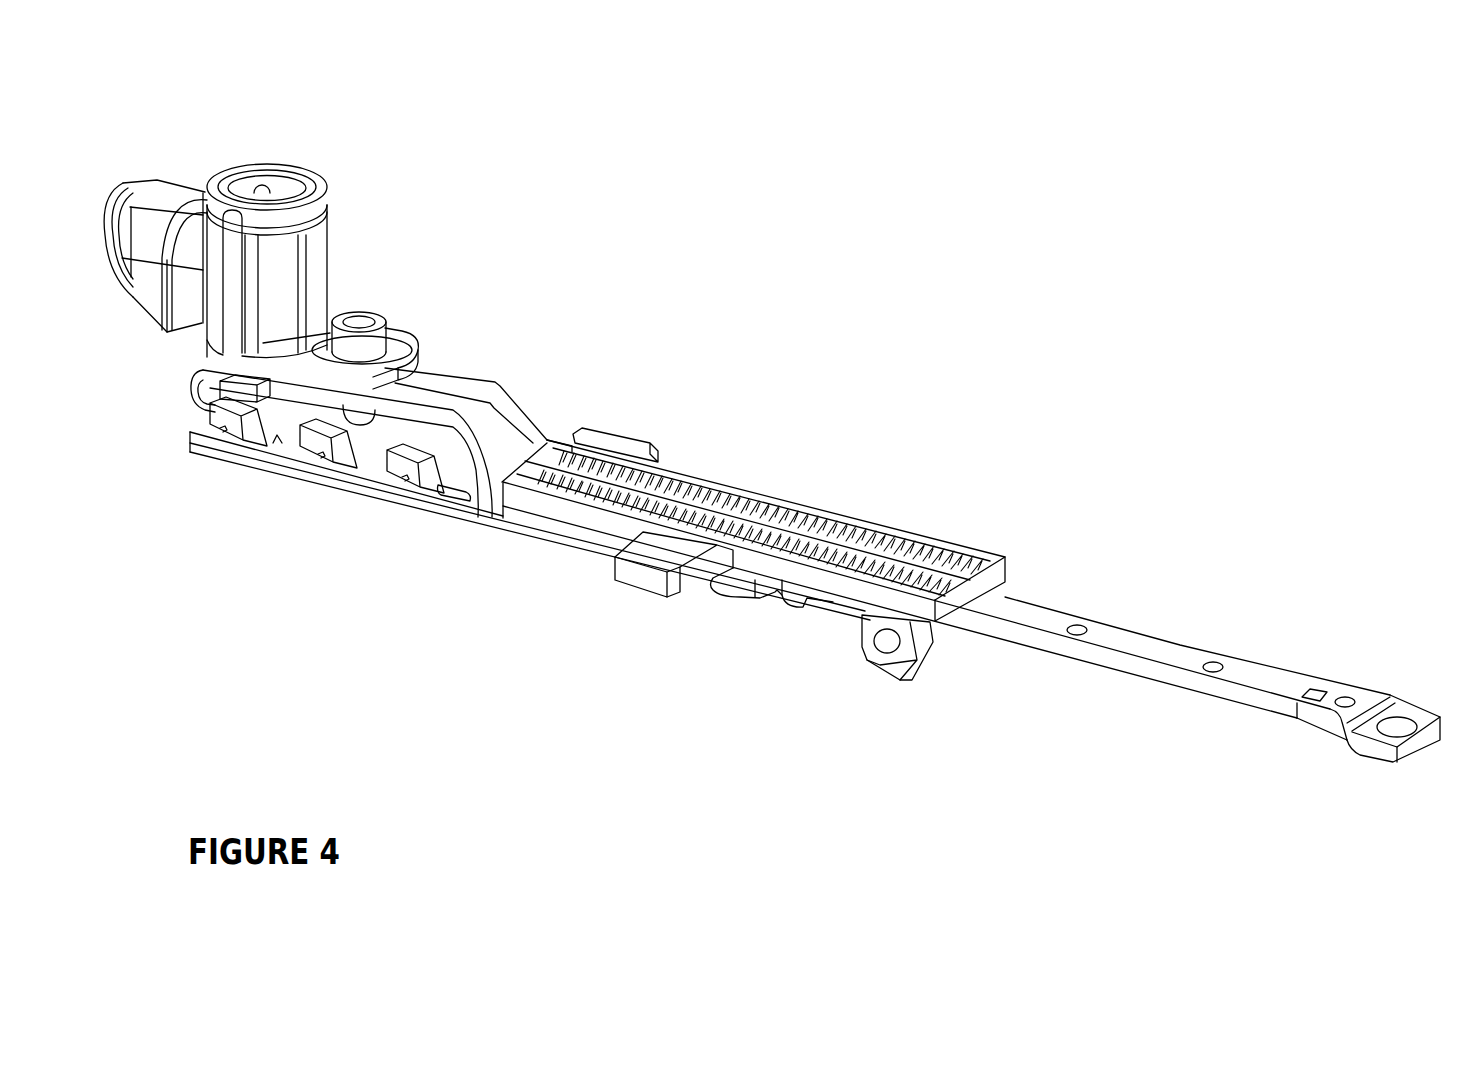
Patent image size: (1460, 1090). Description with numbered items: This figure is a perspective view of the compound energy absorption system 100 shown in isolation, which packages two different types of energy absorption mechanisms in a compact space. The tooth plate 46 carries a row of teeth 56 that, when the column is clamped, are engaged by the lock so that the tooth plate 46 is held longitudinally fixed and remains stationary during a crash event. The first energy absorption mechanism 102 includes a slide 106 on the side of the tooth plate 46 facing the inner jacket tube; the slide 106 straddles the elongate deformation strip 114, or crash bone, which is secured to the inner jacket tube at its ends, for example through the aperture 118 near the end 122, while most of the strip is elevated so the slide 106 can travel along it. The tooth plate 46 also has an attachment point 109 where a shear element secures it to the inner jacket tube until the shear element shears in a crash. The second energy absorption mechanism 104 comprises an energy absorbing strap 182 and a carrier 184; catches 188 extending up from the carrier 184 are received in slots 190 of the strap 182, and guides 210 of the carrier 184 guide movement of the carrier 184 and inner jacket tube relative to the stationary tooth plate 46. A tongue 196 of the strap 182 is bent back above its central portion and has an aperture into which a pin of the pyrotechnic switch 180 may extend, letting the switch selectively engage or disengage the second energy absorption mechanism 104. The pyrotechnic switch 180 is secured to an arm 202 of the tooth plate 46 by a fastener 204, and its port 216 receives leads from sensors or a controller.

The compound energy absorption system 100 is at (766, 454).
The first energy absorption mechanism 102 is at (954, 671).
The second energy absorption mechanism 104 is at (176, 489).
The slide 106 is at (740, 583).
The attachment point 109 is at (857, 656).
The deformation strip 114 is at (1152, 638).
The aperture 118 is at (1398, 720).
The end 122 is at (1374, 720).
The pyrotechnic switch 180 is at (242, 147).
The energy absorbing strap 182 is at (461, 469).
The carrier 184 is at (495, 545).
The catches 188 is at (330, 448).
The slots 190 is at (277, 437).
The tongue 196 is at (207, 381).
The arm 202 is at (450, 387).
The fastener 204 is at (380, 313).
The guides 210 is at (608, 442).
The port 216 is at (108, 210).
The tooth plate 46 is at (1008, 557).
The teeth 56 is at (868, 533).